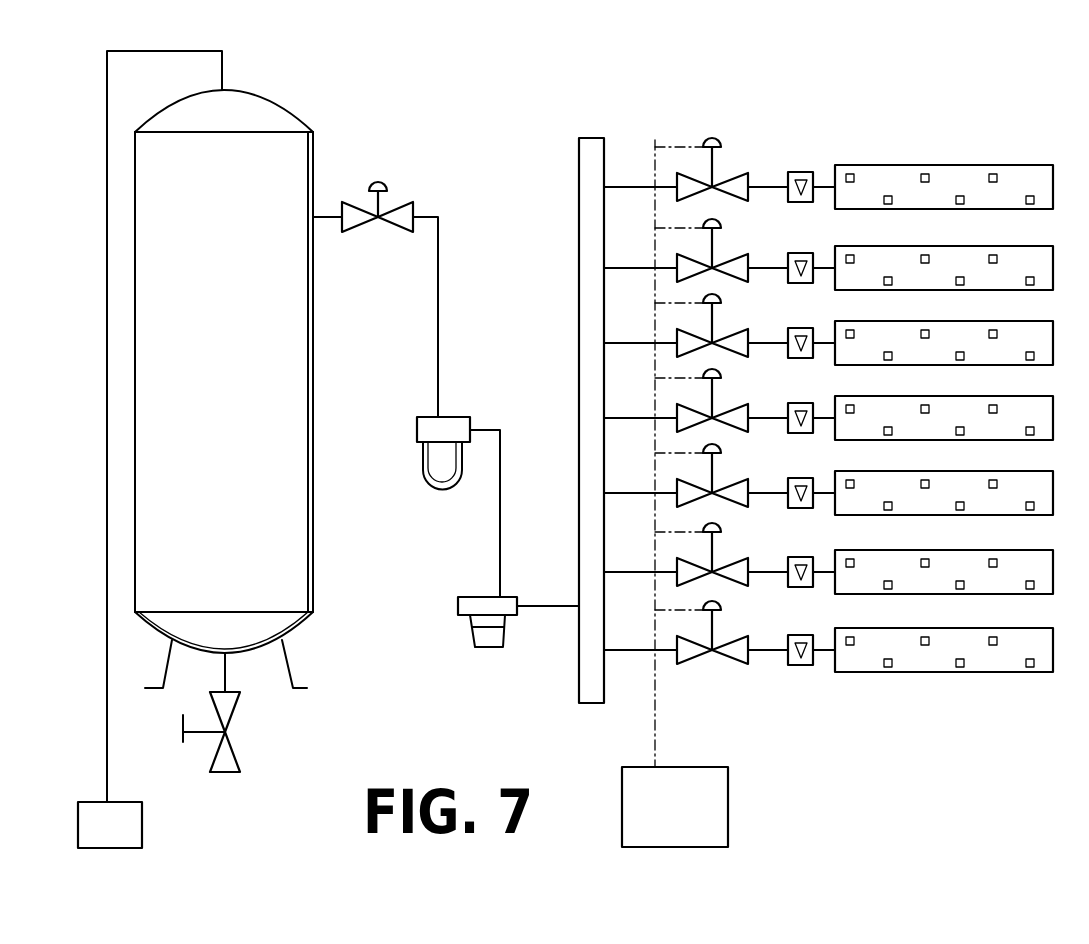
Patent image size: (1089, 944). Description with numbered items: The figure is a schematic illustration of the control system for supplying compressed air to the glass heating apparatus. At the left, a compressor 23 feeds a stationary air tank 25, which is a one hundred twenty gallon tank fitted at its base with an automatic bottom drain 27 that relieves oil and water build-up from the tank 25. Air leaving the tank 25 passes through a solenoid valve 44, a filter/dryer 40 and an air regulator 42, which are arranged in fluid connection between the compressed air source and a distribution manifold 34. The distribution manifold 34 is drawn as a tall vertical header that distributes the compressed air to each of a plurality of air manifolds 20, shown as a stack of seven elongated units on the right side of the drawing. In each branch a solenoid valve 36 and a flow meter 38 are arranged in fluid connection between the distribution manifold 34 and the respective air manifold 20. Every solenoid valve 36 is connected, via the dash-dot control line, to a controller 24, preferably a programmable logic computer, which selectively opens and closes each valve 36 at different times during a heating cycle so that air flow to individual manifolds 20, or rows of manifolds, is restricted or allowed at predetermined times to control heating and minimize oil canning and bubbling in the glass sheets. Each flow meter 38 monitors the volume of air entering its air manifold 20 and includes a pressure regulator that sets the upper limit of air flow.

The air manifold 20 is at (967, 165).
The compressor 23 is at (92, 813).
The controller 24 is at (702, 788).
The stationary air tank 25 is at (295, 473).
The automatic bottom drain 27 is at (220, 760).
The distribution manifold 34 is at (592, 157).
The solenoid valve 36 is at (727, 177).
The flow meter 38 is at (800, 167).
The filter/dryer 40 is at (452, 425).
The air regulator 42 is at (467, 602).
The solenoid valve 44 is at (415, 205).